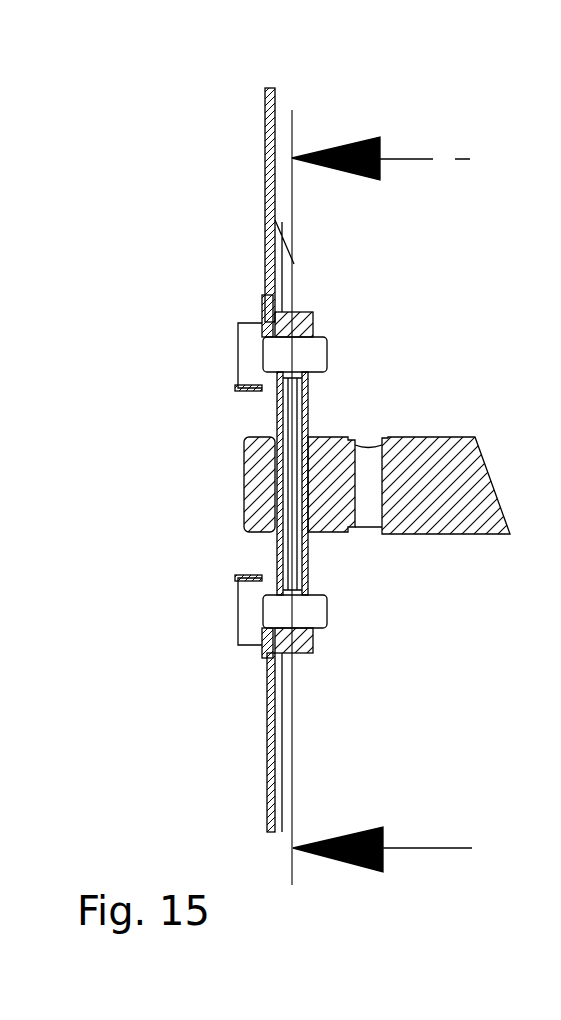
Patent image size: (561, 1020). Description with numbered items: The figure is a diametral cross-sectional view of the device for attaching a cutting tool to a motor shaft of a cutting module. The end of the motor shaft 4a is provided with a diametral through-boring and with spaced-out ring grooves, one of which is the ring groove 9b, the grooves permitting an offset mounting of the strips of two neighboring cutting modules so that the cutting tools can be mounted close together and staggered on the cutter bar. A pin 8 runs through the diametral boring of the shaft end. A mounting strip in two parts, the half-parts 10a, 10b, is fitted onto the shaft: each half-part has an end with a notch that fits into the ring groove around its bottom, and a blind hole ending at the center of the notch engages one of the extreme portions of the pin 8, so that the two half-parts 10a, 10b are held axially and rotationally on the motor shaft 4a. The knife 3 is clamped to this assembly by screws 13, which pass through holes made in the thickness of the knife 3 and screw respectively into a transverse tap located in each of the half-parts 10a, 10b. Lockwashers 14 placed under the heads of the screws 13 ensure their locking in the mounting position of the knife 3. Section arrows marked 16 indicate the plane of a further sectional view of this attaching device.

The knife 3 is at (265, 773).
The motor shaft 4a is at (448, 493).
The pin 8 is at (303, 415).
The ring groove 9b is at (373, 490).
The mounting strip half-part 10a is at (318, 310).
The mounting strip half-part 10b is at (318, 650).
The screw 13 is at (237, 347).
The lockwasher 14 is at (237, 398).
The section line 16 is at (382, 471).